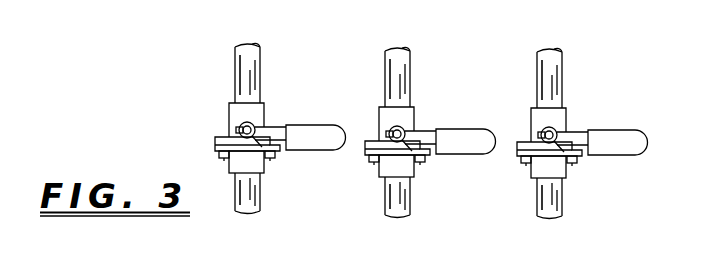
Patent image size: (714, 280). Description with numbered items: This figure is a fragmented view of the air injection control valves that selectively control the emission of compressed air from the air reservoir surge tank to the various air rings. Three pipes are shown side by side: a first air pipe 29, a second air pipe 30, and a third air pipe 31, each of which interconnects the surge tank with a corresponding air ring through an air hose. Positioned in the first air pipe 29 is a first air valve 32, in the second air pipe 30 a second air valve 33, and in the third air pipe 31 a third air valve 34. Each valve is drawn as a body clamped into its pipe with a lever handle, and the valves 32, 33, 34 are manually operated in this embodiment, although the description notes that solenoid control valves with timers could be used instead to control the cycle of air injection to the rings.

The first air pipe 29 is at (572, 133).
The second air pipe 30 is at (421, 132).
The third air pipe 31 is at (261, 70).
The first air valve 32 is at (582, 140).
The second air valve 33 is at (430, 138).
The third air valve 34 is at (257, 117).